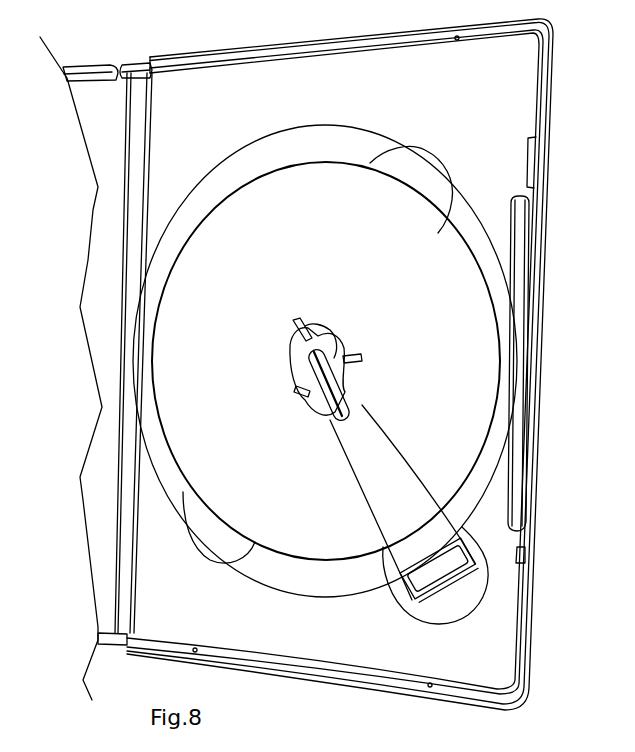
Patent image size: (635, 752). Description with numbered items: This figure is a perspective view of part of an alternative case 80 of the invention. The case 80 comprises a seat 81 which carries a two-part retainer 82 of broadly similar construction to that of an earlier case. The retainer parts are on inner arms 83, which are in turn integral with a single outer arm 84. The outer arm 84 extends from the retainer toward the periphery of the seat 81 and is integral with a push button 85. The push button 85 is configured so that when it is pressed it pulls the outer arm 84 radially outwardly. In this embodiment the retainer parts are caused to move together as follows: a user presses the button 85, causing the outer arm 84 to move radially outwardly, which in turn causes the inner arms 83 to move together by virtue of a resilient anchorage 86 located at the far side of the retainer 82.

The case 80 is at (582, 72).
The seat 81 is at (468, 238).
The two-part retainer 82 is at (343, 333).
The inner arms 83 is at (347, 385).
The outer arm 84 is at (407, 443).
The push button 85 is at (490, 572).
The resilient anchorage 86 is at (305, 333).